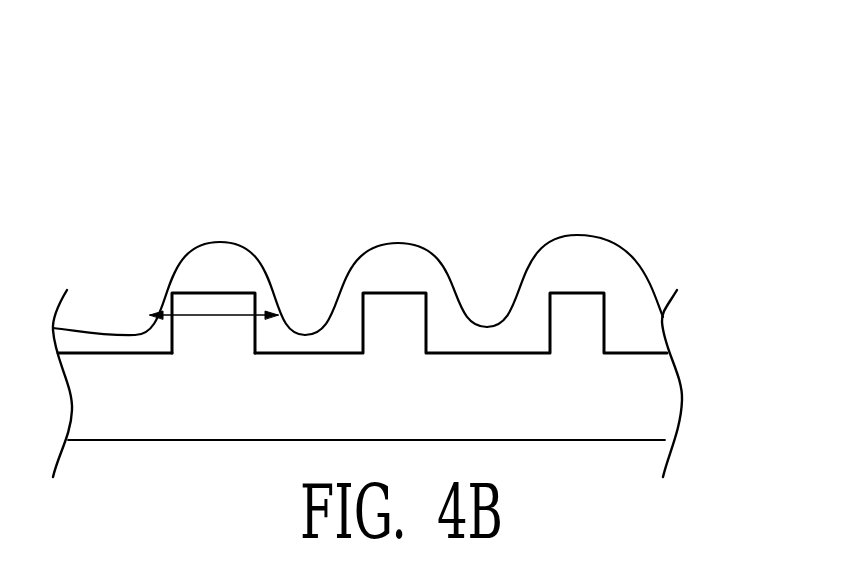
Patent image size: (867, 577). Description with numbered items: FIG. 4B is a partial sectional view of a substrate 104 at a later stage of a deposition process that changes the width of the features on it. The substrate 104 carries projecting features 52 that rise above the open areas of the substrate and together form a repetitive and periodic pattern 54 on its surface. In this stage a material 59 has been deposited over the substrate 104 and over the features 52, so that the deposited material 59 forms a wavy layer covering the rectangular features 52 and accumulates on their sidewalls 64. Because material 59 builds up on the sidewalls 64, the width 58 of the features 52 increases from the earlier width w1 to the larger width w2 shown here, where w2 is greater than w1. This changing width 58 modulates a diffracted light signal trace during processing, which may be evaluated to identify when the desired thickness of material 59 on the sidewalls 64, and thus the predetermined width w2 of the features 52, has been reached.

The substrate 104 is at (210, 65).
The pattern 54 is at (400, 123).
The material 59 is at (222, 242).
The features 52 is at (398, 242).
The sidewalls 64 is at (443, 287).
The width 58 is at (233, 317).